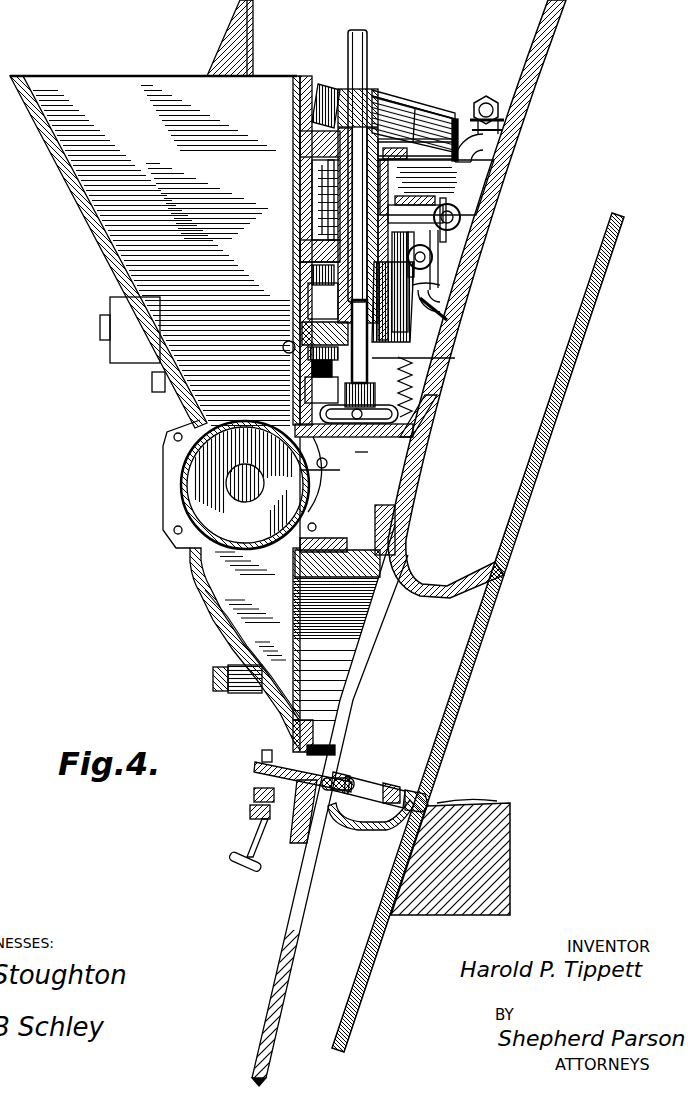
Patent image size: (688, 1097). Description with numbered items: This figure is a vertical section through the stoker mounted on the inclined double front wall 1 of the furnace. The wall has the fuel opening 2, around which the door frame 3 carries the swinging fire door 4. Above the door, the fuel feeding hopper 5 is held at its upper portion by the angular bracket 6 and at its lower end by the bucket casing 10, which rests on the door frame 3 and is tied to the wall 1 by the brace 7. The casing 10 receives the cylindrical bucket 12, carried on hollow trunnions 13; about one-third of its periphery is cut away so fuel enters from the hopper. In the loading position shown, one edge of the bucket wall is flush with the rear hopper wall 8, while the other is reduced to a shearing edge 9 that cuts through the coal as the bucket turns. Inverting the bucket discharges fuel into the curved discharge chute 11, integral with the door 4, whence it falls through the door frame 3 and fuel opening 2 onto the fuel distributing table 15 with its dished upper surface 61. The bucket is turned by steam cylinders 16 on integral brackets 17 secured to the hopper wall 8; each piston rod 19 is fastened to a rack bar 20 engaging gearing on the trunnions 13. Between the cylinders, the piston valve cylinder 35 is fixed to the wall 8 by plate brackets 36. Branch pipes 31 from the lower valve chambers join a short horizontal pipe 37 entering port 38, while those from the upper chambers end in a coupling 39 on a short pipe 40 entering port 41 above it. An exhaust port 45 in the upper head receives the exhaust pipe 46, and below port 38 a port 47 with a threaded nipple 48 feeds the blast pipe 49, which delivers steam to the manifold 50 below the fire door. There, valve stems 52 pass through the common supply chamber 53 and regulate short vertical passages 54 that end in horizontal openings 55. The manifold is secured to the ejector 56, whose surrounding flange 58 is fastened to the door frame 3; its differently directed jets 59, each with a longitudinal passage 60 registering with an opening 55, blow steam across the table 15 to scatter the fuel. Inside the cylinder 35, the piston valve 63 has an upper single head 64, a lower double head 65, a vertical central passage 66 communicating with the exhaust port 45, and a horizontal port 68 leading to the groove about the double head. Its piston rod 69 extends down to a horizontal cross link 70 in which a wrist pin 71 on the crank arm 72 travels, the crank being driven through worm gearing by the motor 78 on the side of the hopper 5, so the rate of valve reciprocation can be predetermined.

The double front wall 1 is at (417, 485).
The fuel opening 2 is at (414, 650).
The door frame 3 is at (295, 845).
The fire door 4 is at (285, 718).
The fuel feeding hopper 5 is at (94, 234).
The angular bracket 6 is at (478, 190).
The brace 7 is at (362, 452).
The rear wall of hopper 8 is at (300, 322).
The shearing edge 9 is at (175, 504).
The bucket casing 10 is at (183, 470).
The discharge chute 11 is at (194, 600).
The bucket 12 is at (180, 530).
The hollow trunnions 13 is at (322, 485).
The fuel distributing table 15 is at (503, 842).
The steam cylinders 16 is at (300, 318).
The integral brackets 17 is at (307, 104).
The piston rod 19 is at (282, 338).
The rack bar 20 is at (329, 449).
The branch pipes 31 is at (500, 110).
The piston valve cylinder 35 is at (312, 175).
The plate brackets 36 is at (312, 140).
The short horizontal pipe 37 is at (440, 213).
The port 38 is at (395, 210).
The coupling 39 is at (495, 152).
The short pipe 40 is at (430, 115).
The port 41 is at (435, 100).
The exhaust port 45 is at (400, 105).
The exhaust pipe 46 is at (368, 48).
The port 47 is at (432, 300).
The screw threaded nipple 48 is at (440, 285).
The blast pipe 49 is at (435, 257).
The manifold 50 is at (260, 765).
The valve stems 52 is at (248, 845).
The common supply chamber 53 is at (255, 808).
The short vertical passages 54 is at (262, 795).
The horizontal opening 55 is at (272, 760).
The ejector 56 is at (380, 795).
The surrounding flange 58 is at (355, 778).
The jets 59 is at (385, 785).
The longitudinal passage 60 is at (340, 775).
The dished upper surface 61 is at (488, 810).
The piston valve 63 is at (328, 222).
The single head 64 is at (320, 215).
The double head 65 is at (323, 301).
The vertical central passage 66 is at (312, 268).
The horizontal port 68 is at (325, 325).
The piston rod 69 is at (455, 358).
The horizontal cross link 70 is at (413, 440).
The wrist pin 71 is at (400, 416).
The crank arm 72 is at (378, 392).
The motor 78 is at (130, 368).